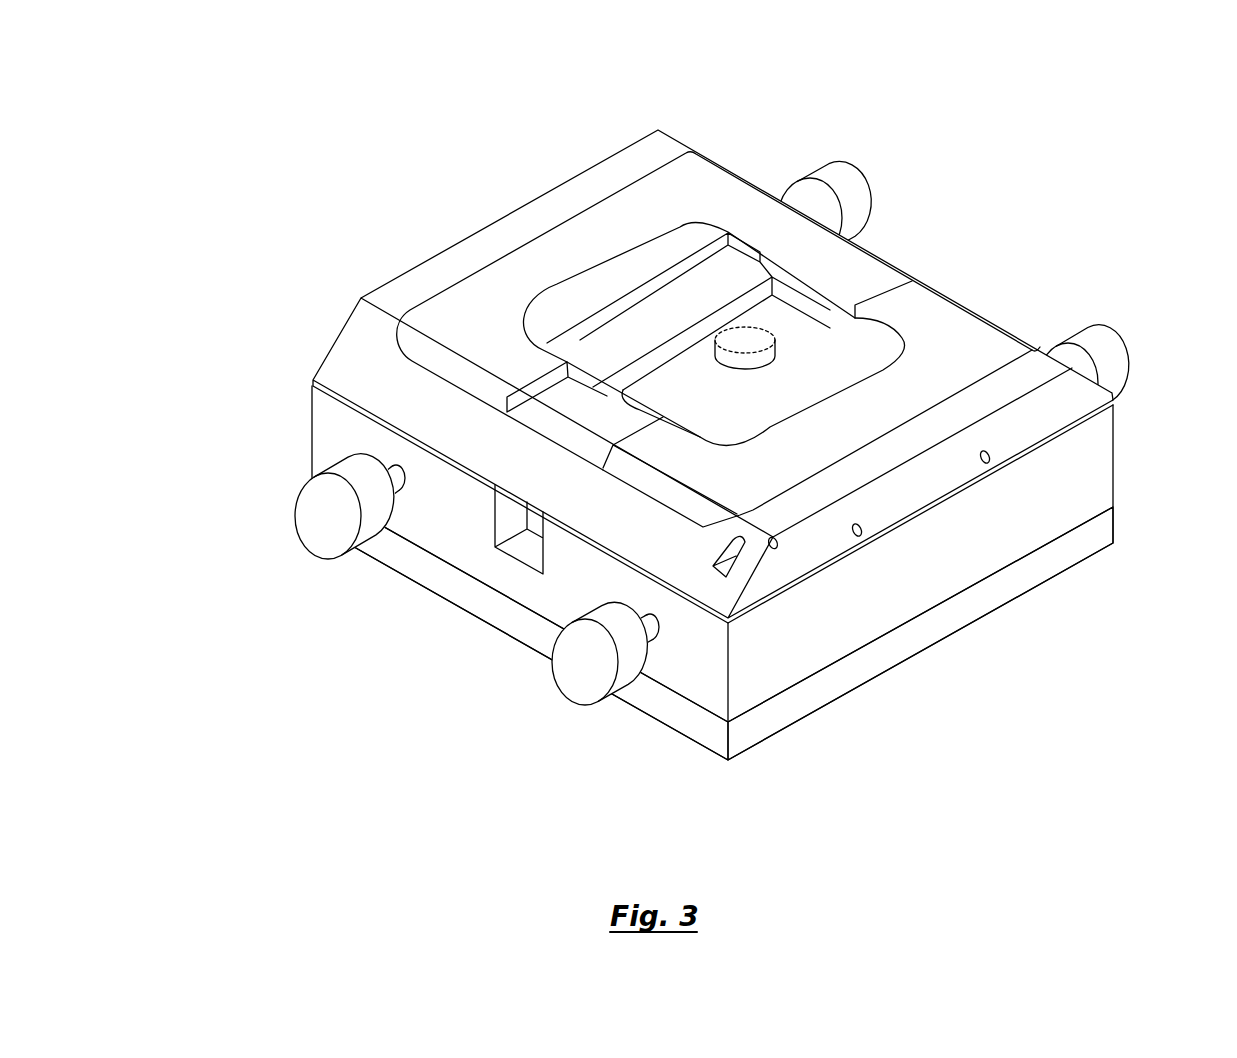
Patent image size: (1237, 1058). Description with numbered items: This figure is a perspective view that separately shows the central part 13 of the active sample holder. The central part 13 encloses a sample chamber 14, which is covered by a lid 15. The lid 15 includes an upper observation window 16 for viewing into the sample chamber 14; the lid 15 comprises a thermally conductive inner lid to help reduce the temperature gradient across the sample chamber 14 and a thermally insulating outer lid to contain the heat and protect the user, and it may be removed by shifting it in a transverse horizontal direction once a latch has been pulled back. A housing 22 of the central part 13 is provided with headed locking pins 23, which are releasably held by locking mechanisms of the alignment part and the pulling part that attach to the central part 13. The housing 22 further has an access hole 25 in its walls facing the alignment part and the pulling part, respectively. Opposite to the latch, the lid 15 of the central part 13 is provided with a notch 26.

The central part 13 is at (993, 625).
The sample chamber 14 is at (692, 383).
The lid 15 is at (1010, 433).
The upper observation window 16 is at (757, 352).
The housing 22 is at (693, 673).
The headed locking pins 23 is at (822, 192).
The access hole 25 is at (523, 532).
The notch 26 is at (731, 557).